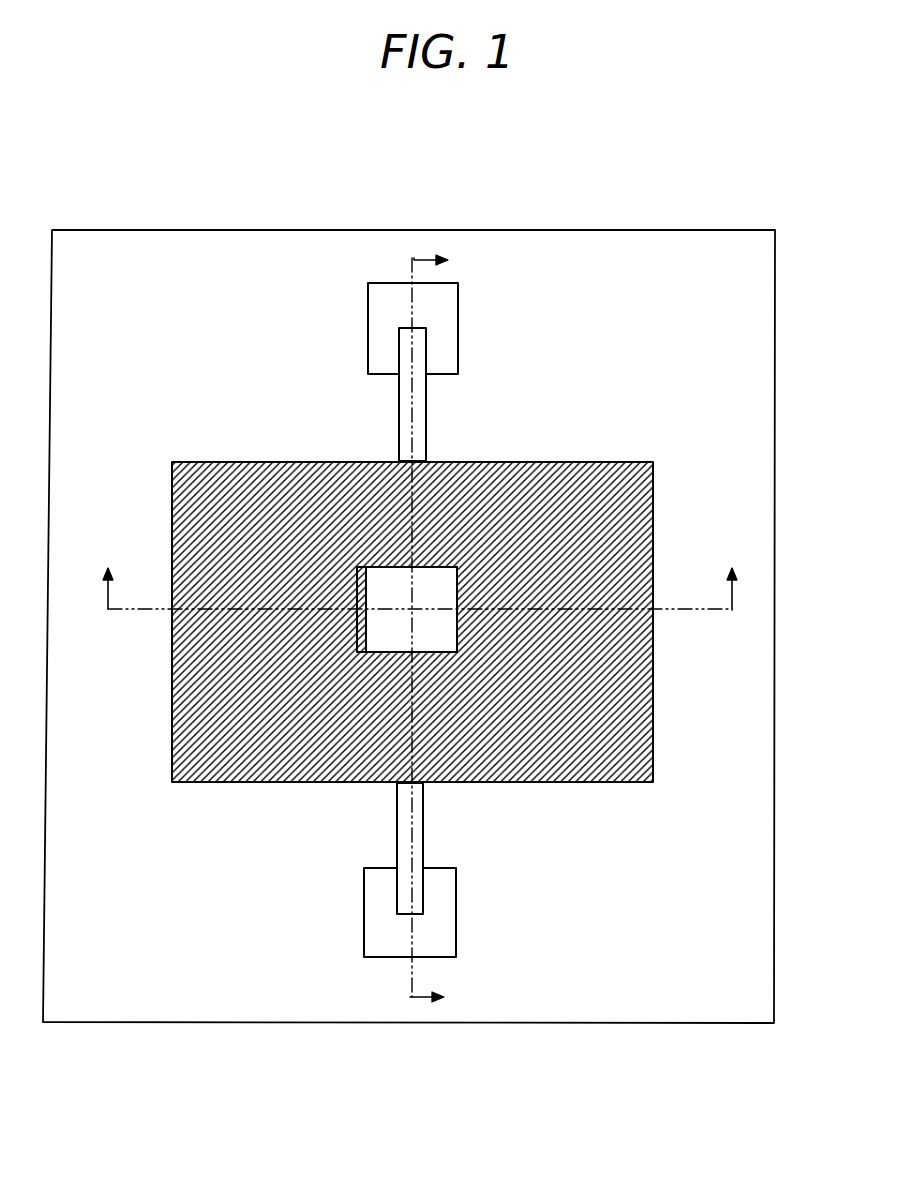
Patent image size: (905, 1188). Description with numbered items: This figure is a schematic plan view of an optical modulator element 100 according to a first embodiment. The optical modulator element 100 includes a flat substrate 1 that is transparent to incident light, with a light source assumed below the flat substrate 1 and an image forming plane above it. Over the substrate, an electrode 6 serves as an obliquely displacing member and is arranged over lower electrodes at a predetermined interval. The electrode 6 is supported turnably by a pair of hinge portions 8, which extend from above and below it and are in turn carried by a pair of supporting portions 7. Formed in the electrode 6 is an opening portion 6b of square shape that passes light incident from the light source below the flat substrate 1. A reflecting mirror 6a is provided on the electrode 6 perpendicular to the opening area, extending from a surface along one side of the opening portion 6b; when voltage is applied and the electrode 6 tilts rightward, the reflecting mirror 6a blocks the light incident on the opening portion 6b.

The optical modulator element 100 is at (640, 210).
The flat substrate 1 is at (762, 479).
The electrode 6 is at (600, 470).
The reflecting mirror 6a is at (360, 572).
The opening portion 6b is at (432, 588).
The supporting portion 7 is at (450, 326).
The hinge portion 8 is at (420, 418).